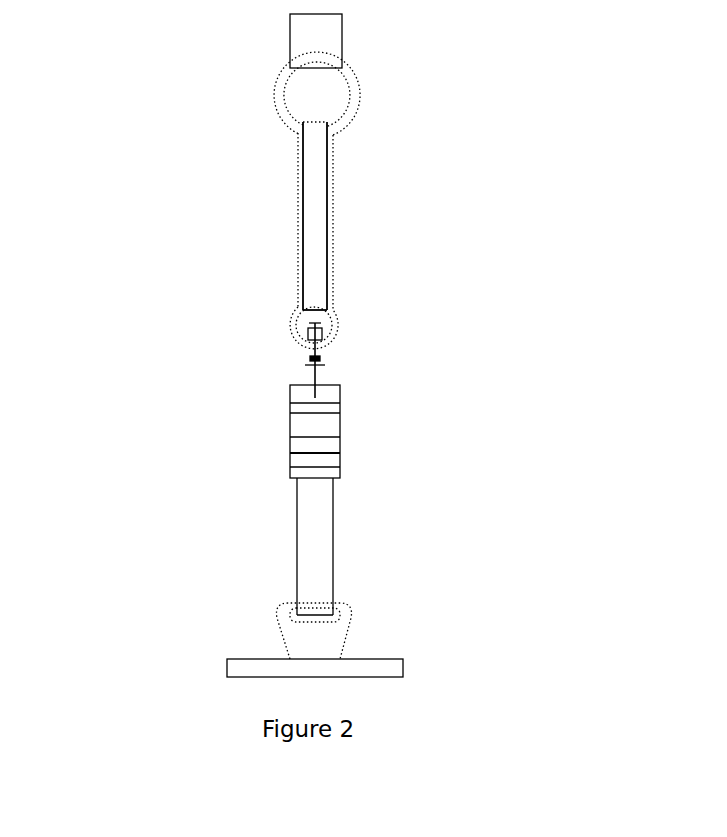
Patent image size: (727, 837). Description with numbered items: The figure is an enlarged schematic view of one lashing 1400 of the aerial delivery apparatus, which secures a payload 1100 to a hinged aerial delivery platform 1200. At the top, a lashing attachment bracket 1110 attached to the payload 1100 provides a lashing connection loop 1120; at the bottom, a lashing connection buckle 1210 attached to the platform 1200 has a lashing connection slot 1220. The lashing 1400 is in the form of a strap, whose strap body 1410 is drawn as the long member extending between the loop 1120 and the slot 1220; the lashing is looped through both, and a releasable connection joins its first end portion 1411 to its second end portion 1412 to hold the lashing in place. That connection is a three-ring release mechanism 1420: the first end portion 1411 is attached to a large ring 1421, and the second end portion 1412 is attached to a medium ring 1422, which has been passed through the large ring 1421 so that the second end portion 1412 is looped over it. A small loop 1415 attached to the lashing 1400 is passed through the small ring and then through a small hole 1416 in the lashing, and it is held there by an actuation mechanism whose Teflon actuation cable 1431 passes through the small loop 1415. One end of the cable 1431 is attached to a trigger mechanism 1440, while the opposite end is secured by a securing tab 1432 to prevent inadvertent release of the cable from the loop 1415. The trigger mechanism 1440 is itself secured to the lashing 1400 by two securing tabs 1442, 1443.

The payload 1100 is at (435, 77).
The lashing attachment bracket 1110 is at (333, 43).
The lashing connection loop 1120 is at (360, 110).
The lashing 1400 is at (279, 216).
The connecting rod 1410 is at (320, 213).
The first end portion 1411 is at (320, 302).
The second end portion 1412 is at (321, 335).
The small loop 1415 is at (308, 362).
The small hole 1416 is at (312, 368).
The 3-ring release mechanism 1420 is at (413, 349).
The large ring 1421 is at (340, 322).
The medium ring 1422 is at (300, 350).
The actuation cable 1431 is at (318, 372).
The securing tab 1432 is at (312, 350).
The trigger mechanism 1440 is at (329, 441).
The securing tab 1442 is at (332, 410).
The securing tab 1443 is at (298, 460).
The hinged aerial delivery platform 1200 is at (393, 668).
The lashing connection buckle 1210 is at (338, 633).
The lashing connection slot 1220 is at (340, 615).